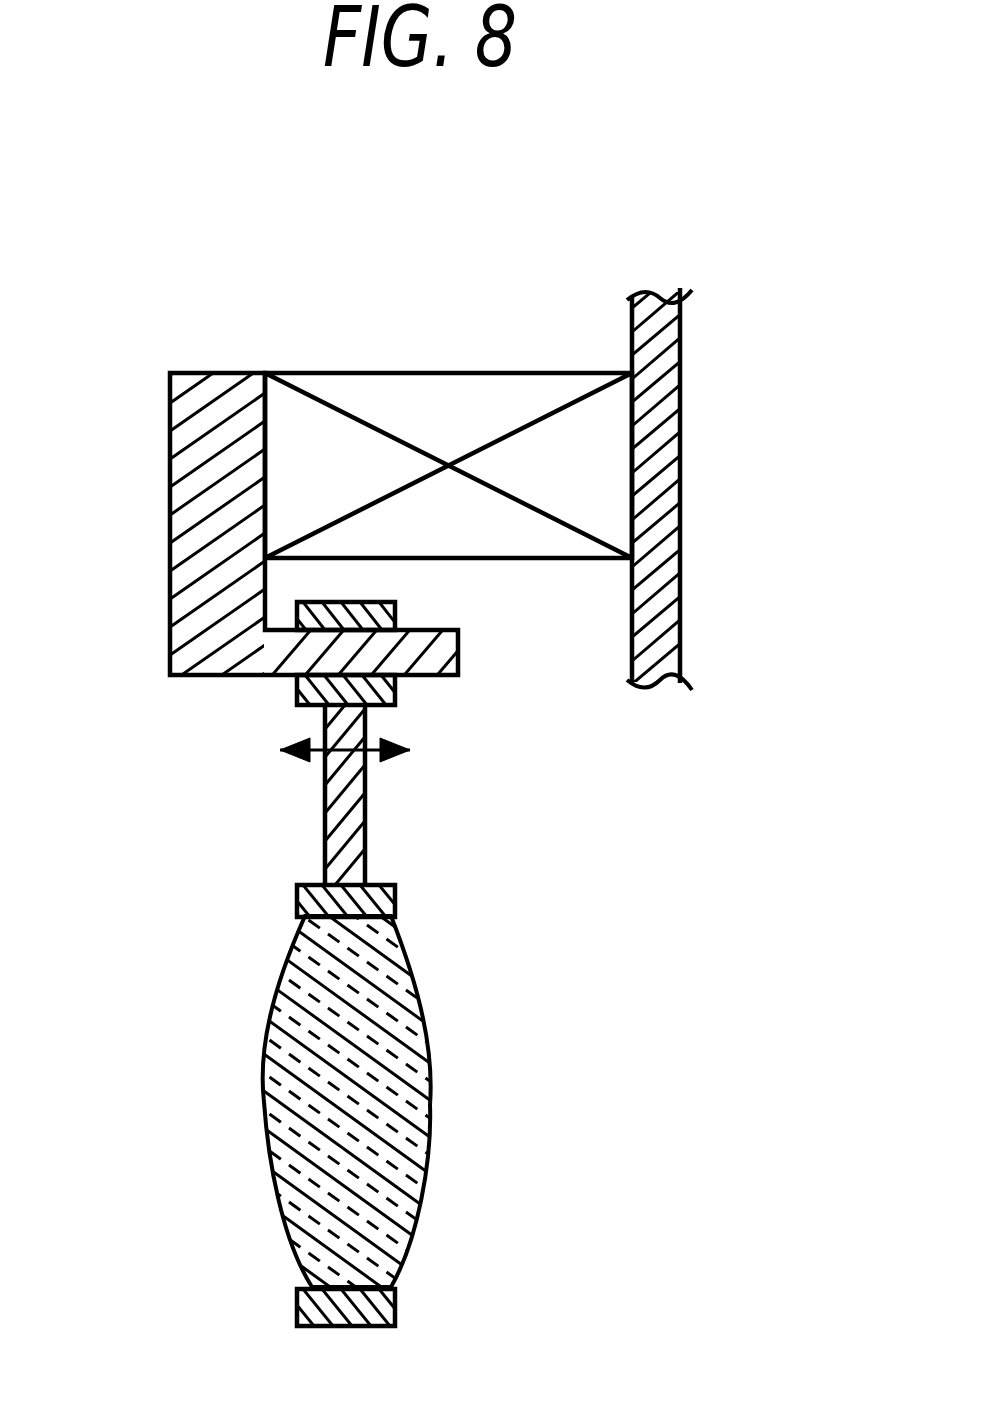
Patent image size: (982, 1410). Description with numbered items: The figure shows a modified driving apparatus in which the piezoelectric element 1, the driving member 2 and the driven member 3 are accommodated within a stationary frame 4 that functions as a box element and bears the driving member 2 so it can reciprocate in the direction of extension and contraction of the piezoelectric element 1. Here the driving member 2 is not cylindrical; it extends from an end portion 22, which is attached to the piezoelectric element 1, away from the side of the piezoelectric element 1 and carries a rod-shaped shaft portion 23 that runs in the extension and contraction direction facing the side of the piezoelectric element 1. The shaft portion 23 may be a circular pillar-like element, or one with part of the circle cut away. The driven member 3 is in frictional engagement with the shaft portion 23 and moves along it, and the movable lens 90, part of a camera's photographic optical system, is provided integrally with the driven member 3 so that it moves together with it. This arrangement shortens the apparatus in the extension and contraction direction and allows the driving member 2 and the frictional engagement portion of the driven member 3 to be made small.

The piezoelectric element 1 is at (436, 402).
The driving member 2 is at (170, 597).
The end portion 22 is at (210, 478).
The shaft portion 23 is at (300, 647).
The driven member 3 is at (397, 687).
The stationary frame 4 is at (666, 347).
The movable lens 90 is at (394, 1165).